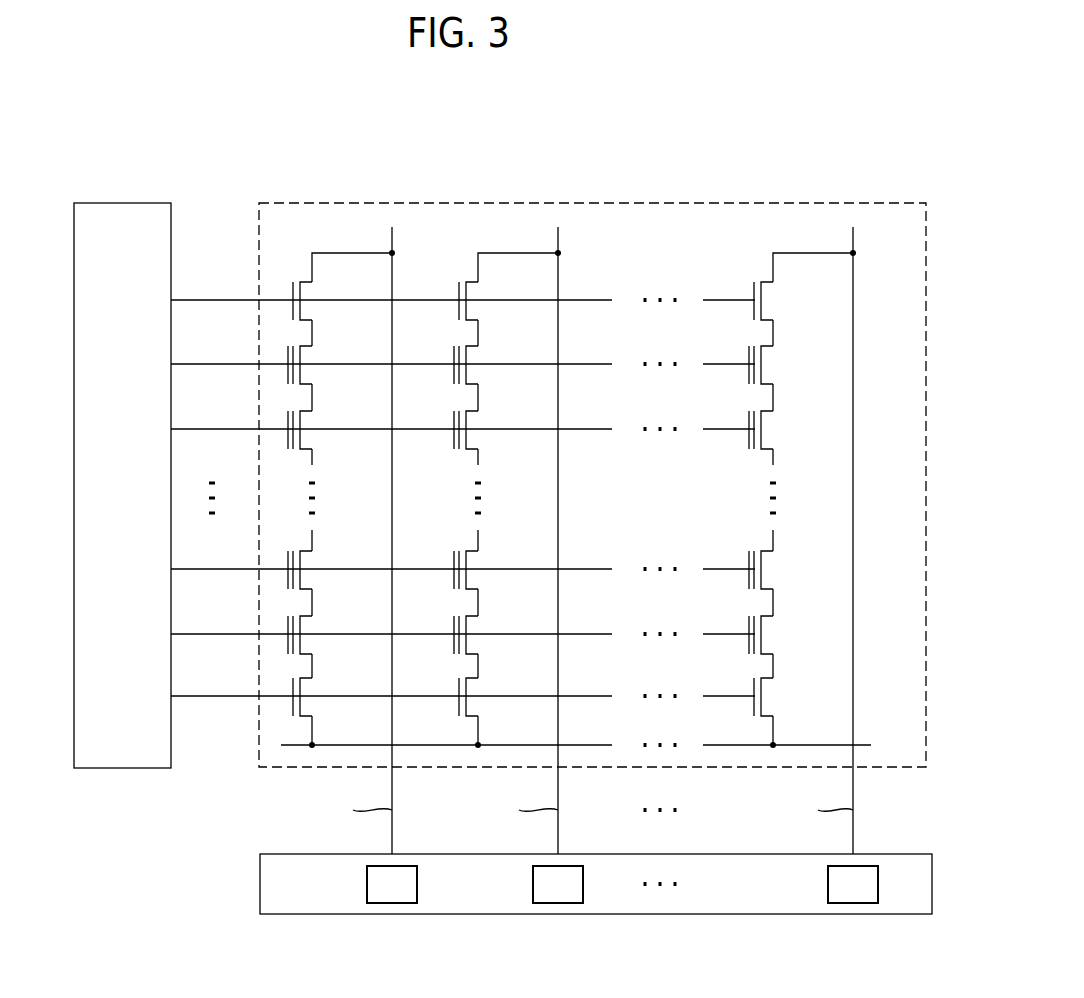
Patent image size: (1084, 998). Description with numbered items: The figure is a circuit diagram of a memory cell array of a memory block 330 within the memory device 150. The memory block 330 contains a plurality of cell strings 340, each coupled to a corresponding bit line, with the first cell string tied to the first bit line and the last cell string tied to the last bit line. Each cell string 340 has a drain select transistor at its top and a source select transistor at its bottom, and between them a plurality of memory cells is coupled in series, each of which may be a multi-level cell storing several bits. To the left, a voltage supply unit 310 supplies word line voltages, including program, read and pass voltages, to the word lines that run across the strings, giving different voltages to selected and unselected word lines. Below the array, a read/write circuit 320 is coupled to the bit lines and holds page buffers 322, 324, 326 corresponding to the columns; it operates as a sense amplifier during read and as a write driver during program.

The memory device 150 is at (902, 105).
The voltage supply unit 310 is at (122, 203).
The read/write circuit 320 is at (260, 885).
The page buffer 322 is at (367, 886).
The page buffer 324 is at (533, 886).
The page buffer 326 is at (828, 886).
The memory block 330 is at (815, 203).
The cell string 340 is at (301, 248).